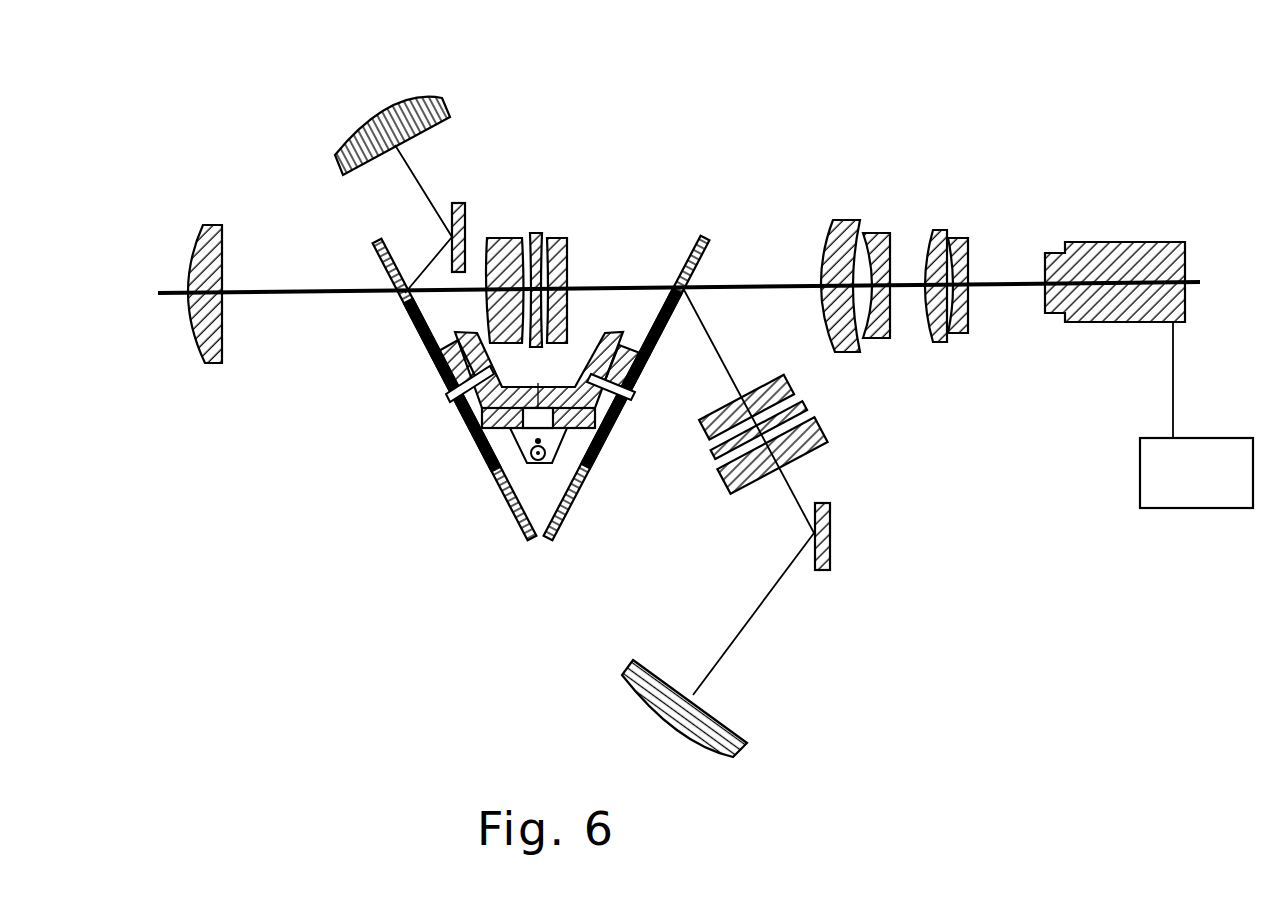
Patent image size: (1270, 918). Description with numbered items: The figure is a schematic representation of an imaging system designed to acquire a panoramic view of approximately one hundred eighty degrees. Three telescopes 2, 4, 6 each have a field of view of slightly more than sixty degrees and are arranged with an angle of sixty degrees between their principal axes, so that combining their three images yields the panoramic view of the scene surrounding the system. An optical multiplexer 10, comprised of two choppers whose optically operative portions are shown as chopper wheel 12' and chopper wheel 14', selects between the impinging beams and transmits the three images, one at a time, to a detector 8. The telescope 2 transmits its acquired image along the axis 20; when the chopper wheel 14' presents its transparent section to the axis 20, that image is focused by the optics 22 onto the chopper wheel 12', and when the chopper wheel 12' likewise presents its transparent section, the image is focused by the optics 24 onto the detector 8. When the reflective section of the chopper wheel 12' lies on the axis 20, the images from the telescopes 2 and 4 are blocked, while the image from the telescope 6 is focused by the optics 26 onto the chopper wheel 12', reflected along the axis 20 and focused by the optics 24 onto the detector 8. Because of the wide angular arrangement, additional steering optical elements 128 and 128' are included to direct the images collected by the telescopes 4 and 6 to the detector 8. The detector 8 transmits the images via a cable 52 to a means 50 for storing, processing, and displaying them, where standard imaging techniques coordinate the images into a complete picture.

The telescope 2 is at (192, 260).
The telescope 4 is at (372, 122).
The telescope 6 is at (727, 735).
The detector 8 is at (1116, 312).
The optical multiplexer 10 is at (532, 400).
The optically operative portion of chopper 12 12' is at (627, 394).
The optically operative portion of chopper 14 14' is at (455, 402).
The axis 20 is at (755, 285).
The optics 22 is at (587, 233).
The optics 24 is at (823, 201).
The optics 26 is at (773, 410).
The means for storing, processing, and displaying 50 is at (1170, 508).
The cable 52 is at (1175, 385).
The steering optical element 128 is at (496, 183).
The steering optical element 128' is at (874, 526).